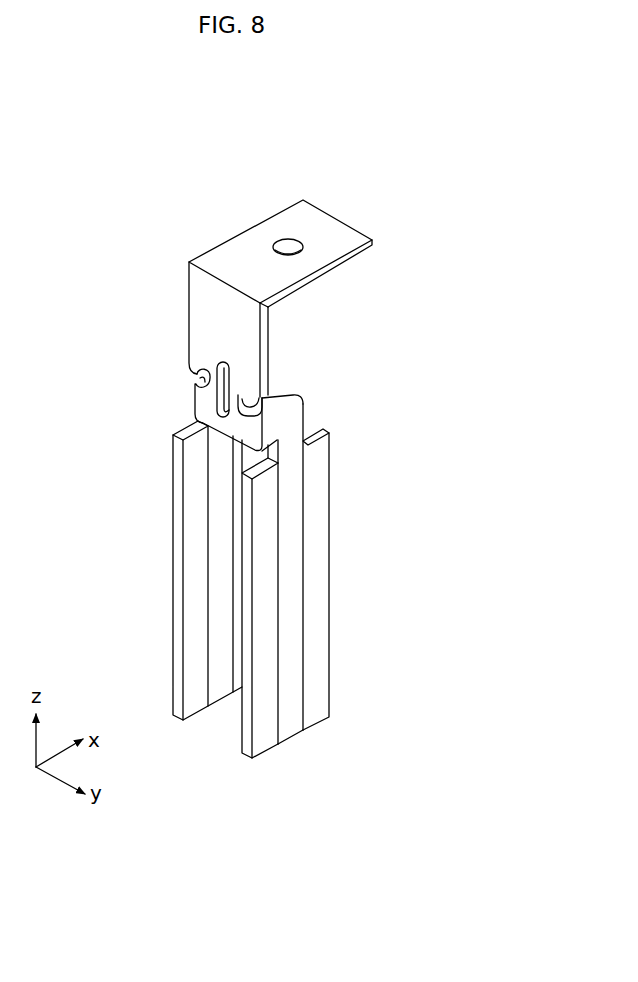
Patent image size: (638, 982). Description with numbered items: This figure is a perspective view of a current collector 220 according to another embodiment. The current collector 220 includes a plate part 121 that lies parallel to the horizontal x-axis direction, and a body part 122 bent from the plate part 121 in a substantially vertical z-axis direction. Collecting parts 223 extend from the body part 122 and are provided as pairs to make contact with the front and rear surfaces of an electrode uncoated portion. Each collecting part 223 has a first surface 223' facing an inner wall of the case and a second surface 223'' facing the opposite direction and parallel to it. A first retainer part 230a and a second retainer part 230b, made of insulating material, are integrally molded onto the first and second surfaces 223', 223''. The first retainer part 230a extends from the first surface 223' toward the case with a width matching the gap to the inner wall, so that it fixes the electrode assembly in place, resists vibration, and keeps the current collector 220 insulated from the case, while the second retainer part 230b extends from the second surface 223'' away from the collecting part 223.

The current collector 220 is at (160, 240).
The plate part 121 is at (315, 220).
The body part 122 is at (205, 317).
The first retainer part 230a is at (266, 745).
The second retainer part 230b is at (313, 713).
The collecting part 223 is at (313, 606).
The first surface 223' is at (211, 627).
The second surface 223'' is at (376, 567).